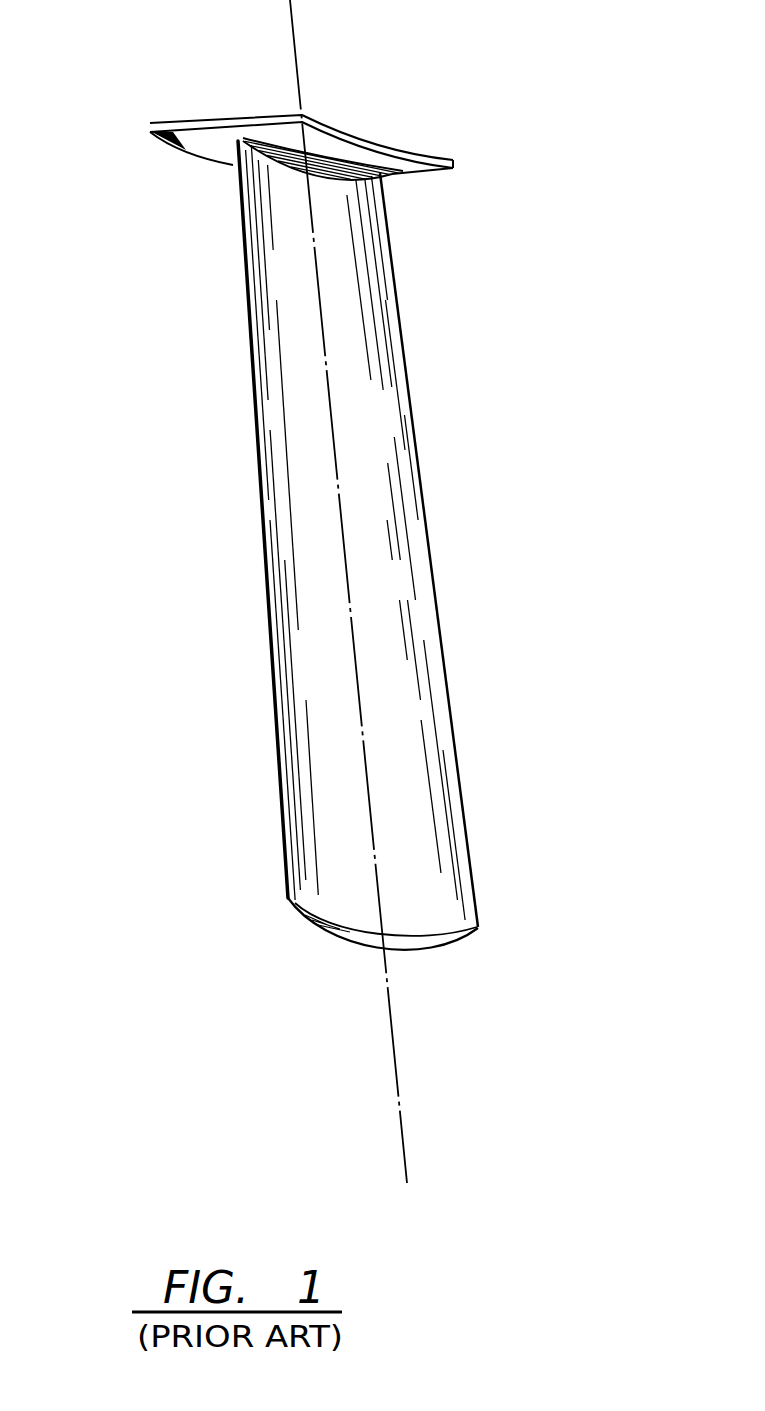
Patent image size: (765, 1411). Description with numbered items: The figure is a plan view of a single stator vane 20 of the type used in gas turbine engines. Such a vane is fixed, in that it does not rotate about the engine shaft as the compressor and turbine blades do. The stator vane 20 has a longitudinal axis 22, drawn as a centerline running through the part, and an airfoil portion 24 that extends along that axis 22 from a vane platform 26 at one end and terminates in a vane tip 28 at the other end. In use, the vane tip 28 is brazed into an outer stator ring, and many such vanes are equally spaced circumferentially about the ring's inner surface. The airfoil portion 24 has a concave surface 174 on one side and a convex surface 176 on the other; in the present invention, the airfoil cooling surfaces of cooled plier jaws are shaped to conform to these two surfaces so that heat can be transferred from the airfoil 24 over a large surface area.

The stator vane 20 is at (200, 425).
The longitudinal axis 22 is at (407, 1158).
The airfoil portion 24 is at (356, 569).
The vane platform 26 is at (347, 152).
The vane tip 28 is at (440, 950).
The concave surface 174 is at (335, 842).
The convex surface 176 is at (327, 935).